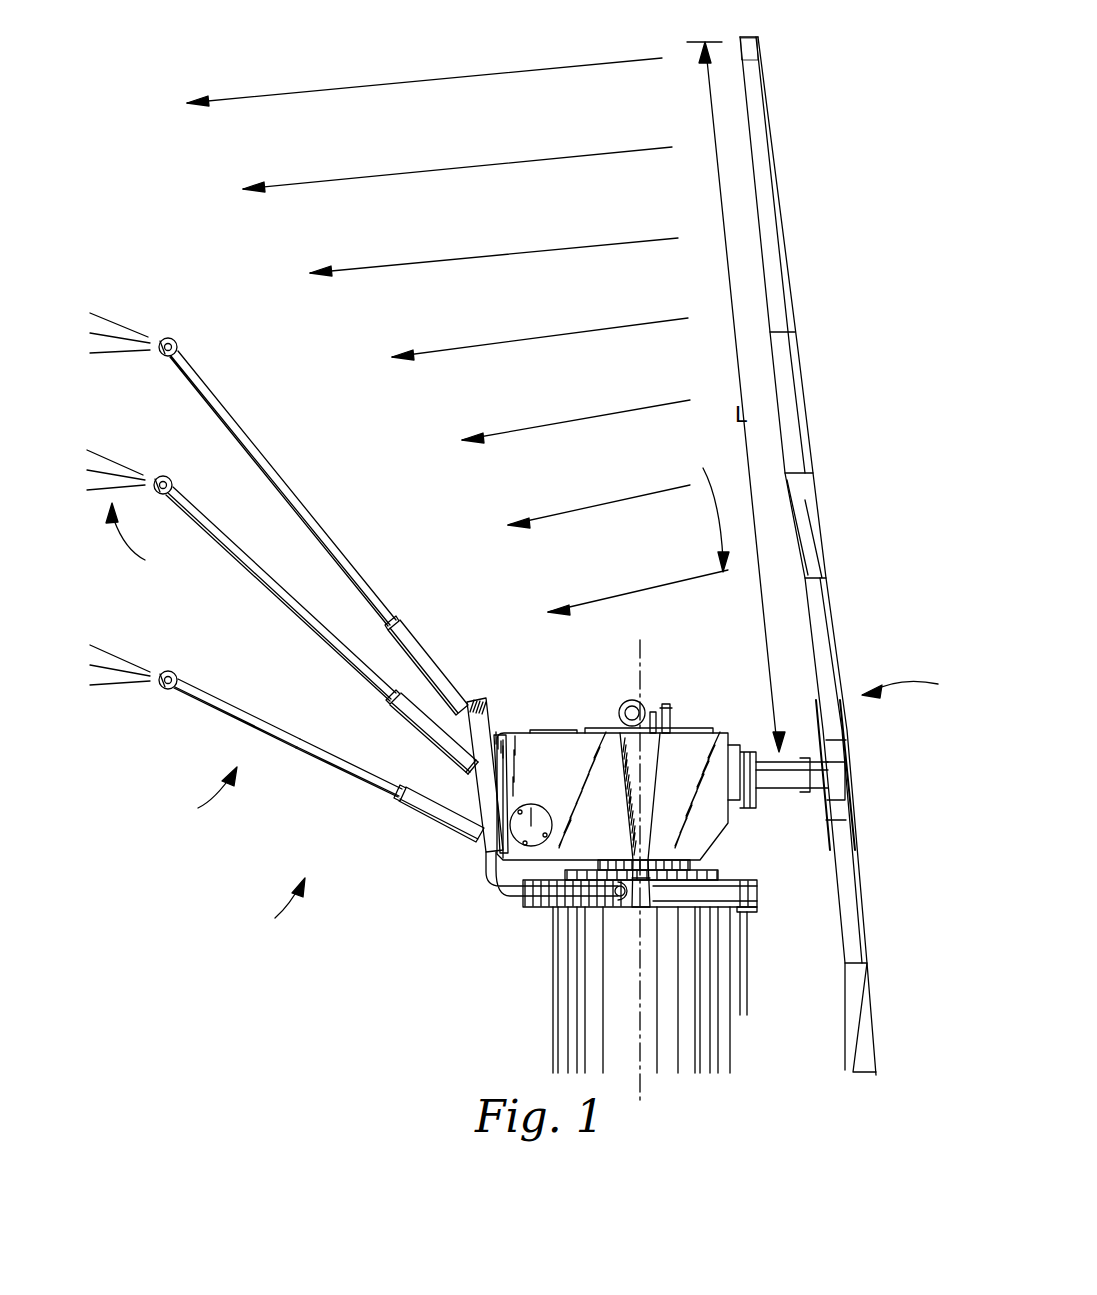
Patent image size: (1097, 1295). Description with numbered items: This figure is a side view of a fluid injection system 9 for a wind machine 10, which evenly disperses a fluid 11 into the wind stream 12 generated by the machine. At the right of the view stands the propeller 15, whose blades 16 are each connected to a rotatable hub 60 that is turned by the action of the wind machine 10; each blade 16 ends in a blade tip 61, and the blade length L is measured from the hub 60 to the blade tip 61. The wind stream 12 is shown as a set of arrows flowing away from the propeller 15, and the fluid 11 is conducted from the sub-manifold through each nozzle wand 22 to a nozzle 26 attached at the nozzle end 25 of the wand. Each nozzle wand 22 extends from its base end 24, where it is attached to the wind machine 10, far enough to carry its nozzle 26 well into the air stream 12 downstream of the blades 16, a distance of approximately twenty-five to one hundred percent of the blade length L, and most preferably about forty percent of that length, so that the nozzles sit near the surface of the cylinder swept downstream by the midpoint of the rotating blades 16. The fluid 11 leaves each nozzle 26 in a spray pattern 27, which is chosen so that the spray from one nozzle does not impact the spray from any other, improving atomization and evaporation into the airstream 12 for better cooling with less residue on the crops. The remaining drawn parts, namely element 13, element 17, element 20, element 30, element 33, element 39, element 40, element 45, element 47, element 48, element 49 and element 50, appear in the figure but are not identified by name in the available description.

The fluid injection system 9 is at (281, 910).
The wind machine 10 is at (703, 507).
The fluid 11 is at (110, 463).
The wind stream 12 is at (445, 345).
The support column 13 is at (570, 1036).
The propeller 15 is at (913, 684).
The blades 16 is at (812, 510).
The lifting eye 17 is at (650, 690).
The direction arrow 20 is at (203, 795).
The nozzle wand 22 is at (300, 490).
The base end 24 is at (500, 832).
The nozzle end 25 is at (200, 695).
The nozzle 26 is at (166, 697).
The spray pattern 27 is at (138, 537).
The mounting flange 30 is at (757, 890).
The column wall 33 is at (745, 985).
The flange lip 39 is at (752, 912).
The supply pipe 40 is at (616, 894).
The drive shaft 45 is at (637, 792).
The manifold 47 is at (488, 740).
The arm tube 48 is at (345, 775).
The arm sleeve 49 is at (435, 812).
The coupling 50 is at (473, 770).
The hub 60 is at (838, 776).
The blade tip 61 is at (750, 47).